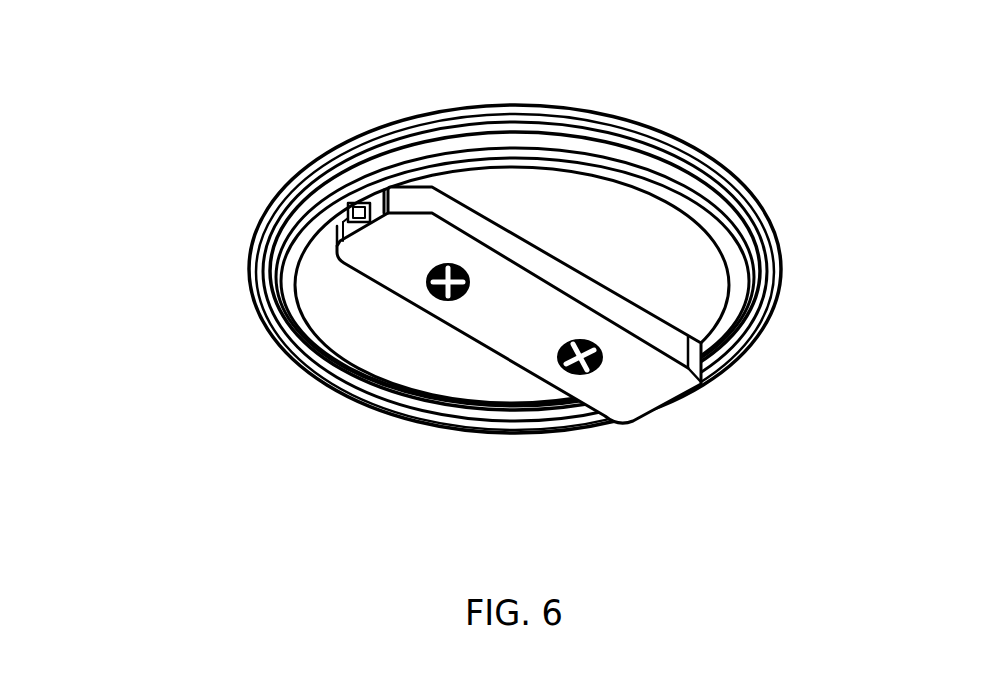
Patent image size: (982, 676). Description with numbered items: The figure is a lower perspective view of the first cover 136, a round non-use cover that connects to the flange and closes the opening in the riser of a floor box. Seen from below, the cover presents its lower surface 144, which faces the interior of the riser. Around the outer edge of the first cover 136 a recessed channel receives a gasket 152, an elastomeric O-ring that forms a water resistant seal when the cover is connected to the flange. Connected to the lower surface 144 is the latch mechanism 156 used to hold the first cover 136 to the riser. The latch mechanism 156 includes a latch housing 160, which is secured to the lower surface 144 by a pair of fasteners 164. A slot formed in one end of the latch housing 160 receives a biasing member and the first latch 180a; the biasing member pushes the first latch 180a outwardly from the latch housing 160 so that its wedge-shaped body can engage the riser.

The first cover 136 is at (461, 273).
The lower surface 144 is at (614, 235).
The gasket 152 is at (757, 193).
The latch mechanism 156 is at (496, 304).
The latch housing 160 is at (403, 267).
The fasteners 164 is at (563, 345).
The first latch 180a is at (357, 200).